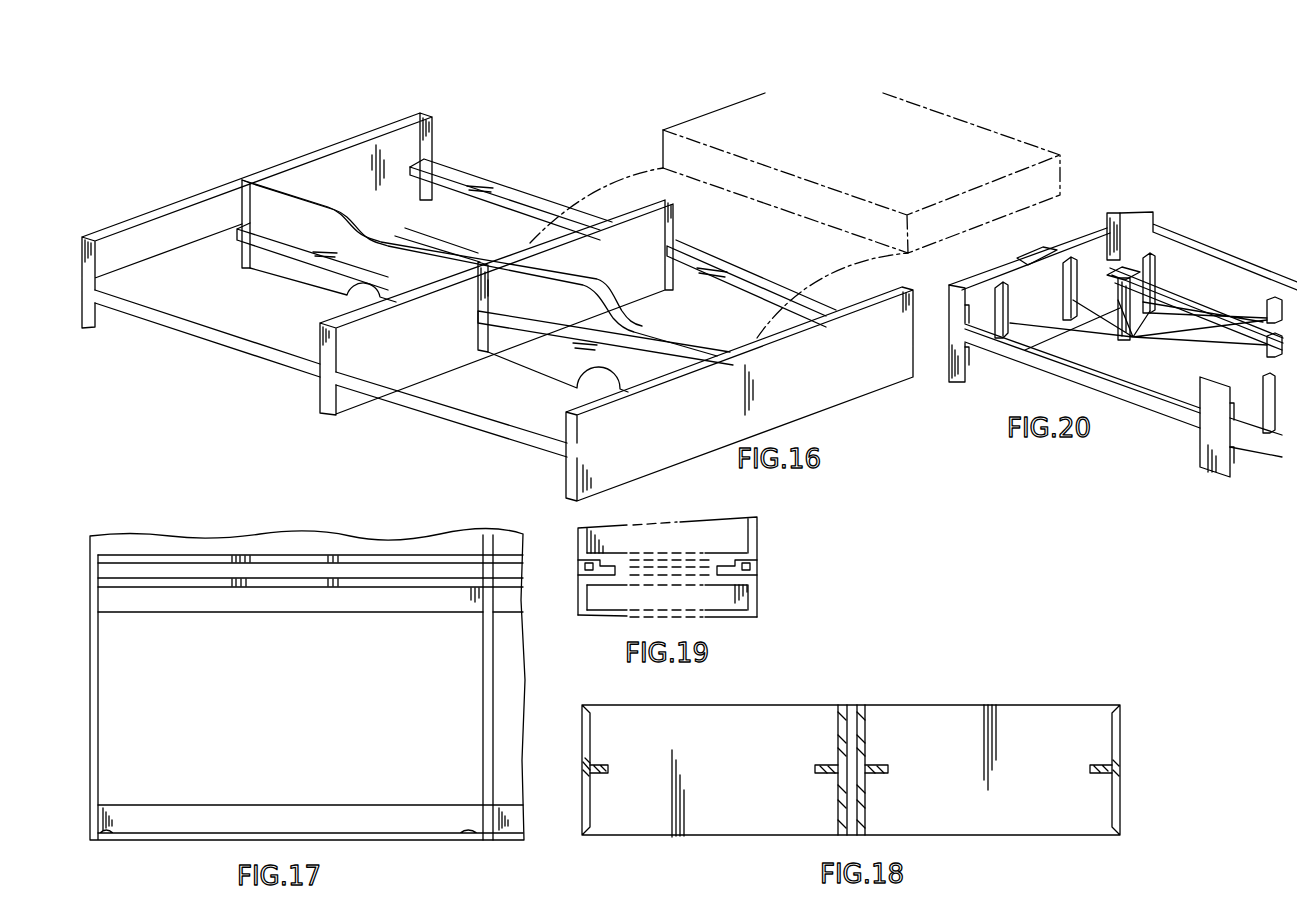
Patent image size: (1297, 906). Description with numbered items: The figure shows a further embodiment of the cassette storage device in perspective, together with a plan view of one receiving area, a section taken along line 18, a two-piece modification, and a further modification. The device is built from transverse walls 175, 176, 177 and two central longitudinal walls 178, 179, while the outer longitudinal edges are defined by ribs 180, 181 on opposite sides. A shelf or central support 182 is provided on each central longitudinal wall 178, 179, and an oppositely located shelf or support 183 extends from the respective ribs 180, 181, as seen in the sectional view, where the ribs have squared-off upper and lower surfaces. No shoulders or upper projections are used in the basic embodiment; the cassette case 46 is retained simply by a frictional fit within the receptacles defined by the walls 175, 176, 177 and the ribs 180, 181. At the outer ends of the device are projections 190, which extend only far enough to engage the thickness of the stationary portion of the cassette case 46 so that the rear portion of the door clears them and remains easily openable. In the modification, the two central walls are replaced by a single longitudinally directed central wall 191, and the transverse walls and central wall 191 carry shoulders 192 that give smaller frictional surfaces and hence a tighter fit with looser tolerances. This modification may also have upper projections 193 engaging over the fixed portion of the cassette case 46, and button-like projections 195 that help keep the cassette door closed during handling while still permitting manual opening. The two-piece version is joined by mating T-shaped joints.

In FIG. 16, the section line 18 is at (588, 194).
In FIG. 16, the cassette case 46 is at (969, 146).
In FIG. 16, the transverse wall 175 is at (827, 393).
In FIG. 16, the transverse wall 176 is at (350, 395).
In FIG. 17, the transverse wall 176 is at (480, 685).
In FIG. 16, the transverse wall 177 is at (203, 267).
In FIG. 17, the transverse wall 177 is at (100, 688).
In FIG. 16, the central longitudinal wall 178 is at (475, 248).
In FIG. 16, the central longitudinal wall 179 is at (440, 247).
In FIG. 17, the central longitudinal wall 179 is at (197, 587).
In FIG. 16, the rib 180 is at (278, 363).
In FIG. 16, the rib 181 is at (508, 185).
In FIG. 16, the shelf or central support 182 is at (253, 228).
In FIG. 18, the shelf or central support 182 is at (823, 765).
In FIG. 16, the shelf or support 183 is at (457, 178).
In FIG. 18, the shelf or support 183 is at (608, 765).
In FIG. 16, the projections 190 is at (432, 130).
In FIG. 17, the projections 190 is at (112, 835).
In FIG. 20, the single longitudinally directed central wall 191 is at (1205, 263).
In FIG. 20, the shoulders 192 is at (1146, 316).
In FIG. 20, the upper projections 193 is at (1033, 250).
In FIG. 20, the buttons or projections 195 is at (965, 310).